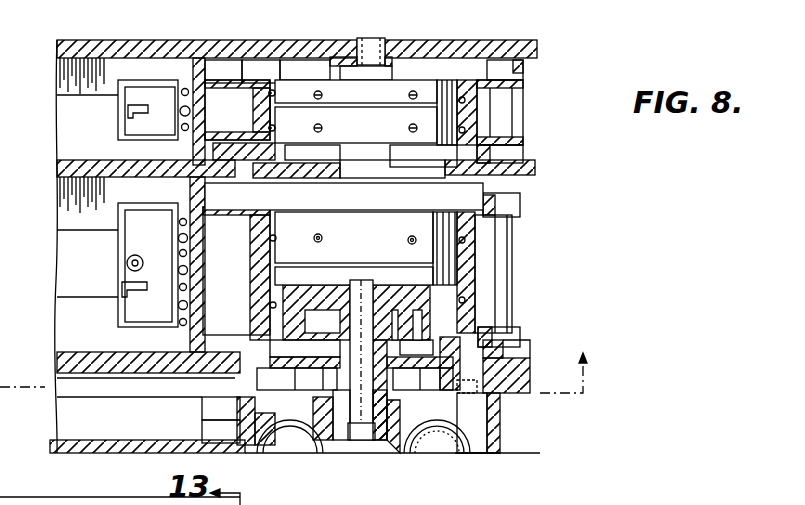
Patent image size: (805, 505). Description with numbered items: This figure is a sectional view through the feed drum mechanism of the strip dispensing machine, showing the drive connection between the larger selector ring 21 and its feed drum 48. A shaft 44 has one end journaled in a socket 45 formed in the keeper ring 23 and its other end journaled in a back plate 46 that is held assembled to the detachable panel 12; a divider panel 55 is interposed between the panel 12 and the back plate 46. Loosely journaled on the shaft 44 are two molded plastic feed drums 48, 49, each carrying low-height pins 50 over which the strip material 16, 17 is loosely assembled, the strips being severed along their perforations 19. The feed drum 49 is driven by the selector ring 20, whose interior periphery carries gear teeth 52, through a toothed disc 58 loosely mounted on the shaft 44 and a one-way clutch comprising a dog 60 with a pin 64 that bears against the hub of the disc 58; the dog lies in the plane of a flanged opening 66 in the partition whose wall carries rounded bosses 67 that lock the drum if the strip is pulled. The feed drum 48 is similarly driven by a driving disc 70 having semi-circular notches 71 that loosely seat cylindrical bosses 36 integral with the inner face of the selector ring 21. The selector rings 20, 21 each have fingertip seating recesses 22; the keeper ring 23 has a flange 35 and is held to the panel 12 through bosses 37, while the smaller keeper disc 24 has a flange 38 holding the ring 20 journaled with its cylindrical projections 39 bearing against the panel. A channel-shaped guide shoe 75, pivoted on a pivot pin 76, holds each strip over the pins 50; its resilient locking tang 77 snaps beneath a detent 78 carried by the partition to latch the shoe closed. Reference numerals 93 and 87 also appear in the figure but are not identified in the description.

The panel 12 is at (517, 396).
The back plate 46 is at (470, 52).
The shaft 44 is at (377, 42).
The divider panel 55 is at (60, 165).
The strip material 17 is at (125, 125).
The strip material 16 is at (120, 270).
The perforations 19 is at (186, 90).
The resilient locking tang 77 is at (200, 60).
The detent 78 is at (238, 68).
The guide shoe 75 is at (497, 107).
The flanged opening 66 is at (230, 147).
The feed drum 49 is at (352, 110).
The pin 64 is at (400, 143).
The dog 60 is at (525, 135).
The pivot pin 76 is at (530, 75).
The toothed disc 58 is at (515, 200).
The rounded bosses 67 is at (344, 261).
The feed drum 48 is at (366, 248).
The pins 50 is at (317, 92).
The socket 45 is at (362, 450).
The gear teeth 52 is at (360, 440).
The semi-circular notches 71 is at (262, 375).
The bosses 37 is at (385, 400).
The driving disc 70 is at (245, 400).
The cylindrical projections 39 is at (245, 425).
The flange 38 is at (255, 452).
The keeper disc 24 is at (197, 452).
The selector ring 20 is at (286, 455).
The fingertip seating recesses 22 is at (290, 440).
The keeper ring 23 is at (380, 452).
The flange 35 is at (402, 442).
The cylindrical bosses 36 is at (473, 397).
The selector ring 21 is at (478, 454).
The member 93 is at (565, 491).
The member 87 is at (607, 491).